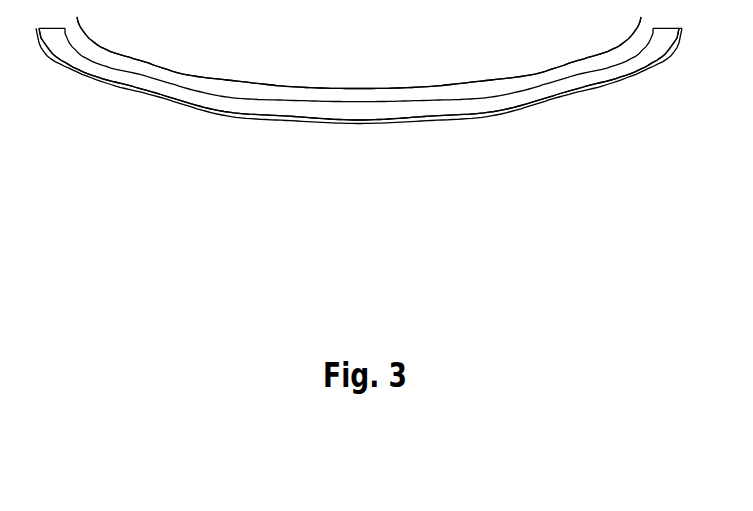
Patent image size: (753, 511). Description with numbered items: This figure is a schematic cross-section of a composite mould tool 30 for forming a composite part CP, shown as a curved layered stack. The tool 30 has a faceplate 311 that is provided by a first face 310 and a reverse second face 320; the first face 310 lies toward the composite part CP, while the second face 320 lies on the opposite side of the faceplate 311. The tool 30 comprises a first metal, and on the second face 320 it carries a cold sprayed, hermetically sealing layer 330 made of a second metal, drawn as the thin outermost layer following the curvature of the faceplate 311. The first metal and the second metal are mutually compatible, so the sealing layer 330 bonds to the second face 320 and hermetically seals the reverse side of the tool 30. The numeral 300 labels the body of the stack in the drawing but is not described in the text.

The composite mould tool 30 is at (359, 112).
The display panel 300 is at (388, 112).
The first face 310 is at (582, 86).
The faceplate 311 is at (634, 67).
The second face 320 is at (496, 116).
The hermetically sealing layer 330 is at (225, 119).
The composite part CP is at (420, 79).